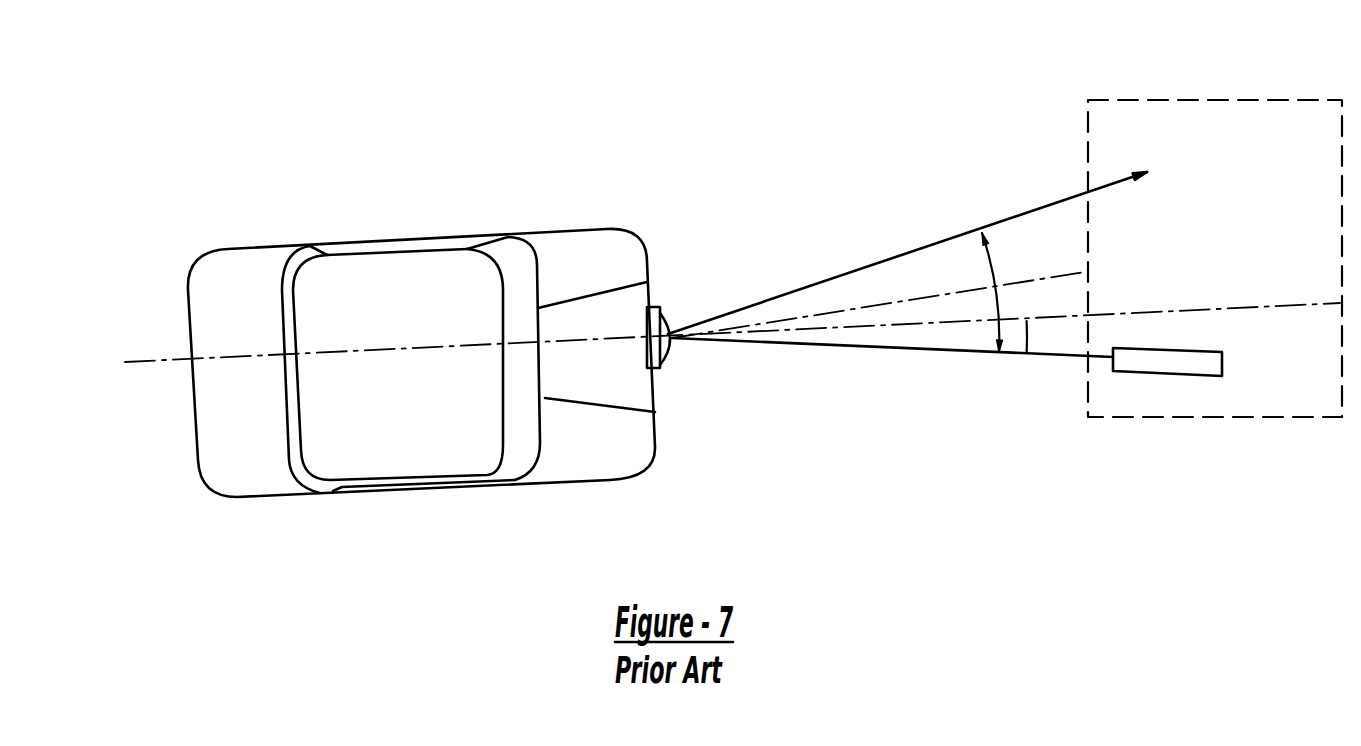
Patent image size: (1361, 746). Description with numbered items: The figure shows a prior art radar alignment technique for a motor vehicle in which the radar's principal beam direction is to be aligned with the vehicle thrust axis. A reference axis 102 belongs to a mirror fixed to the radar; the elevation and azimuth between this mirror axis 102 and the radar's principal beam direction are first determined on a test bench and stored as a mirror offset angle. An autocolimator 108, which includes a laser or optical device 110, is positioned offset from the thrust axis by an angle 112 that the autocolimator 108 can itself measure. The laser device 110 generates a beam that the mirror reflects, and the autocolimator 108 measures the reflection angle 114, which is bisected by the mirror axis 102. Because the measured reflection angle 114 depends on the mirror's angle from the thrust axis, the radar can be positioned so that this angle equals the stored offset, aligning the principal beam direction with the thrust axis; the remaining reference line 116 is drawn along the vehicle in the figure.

The mirror axis 102 is at (1070, 271).
The autocolimator 108 is at (1165, 100).
The laser or optical device 110 is at (1182, 362).
The angle 112 is at (1026, 334).
The reflection angle 114 is at (993, 267).
The vehicle longitudinal axis 116 is at (1267, 305).